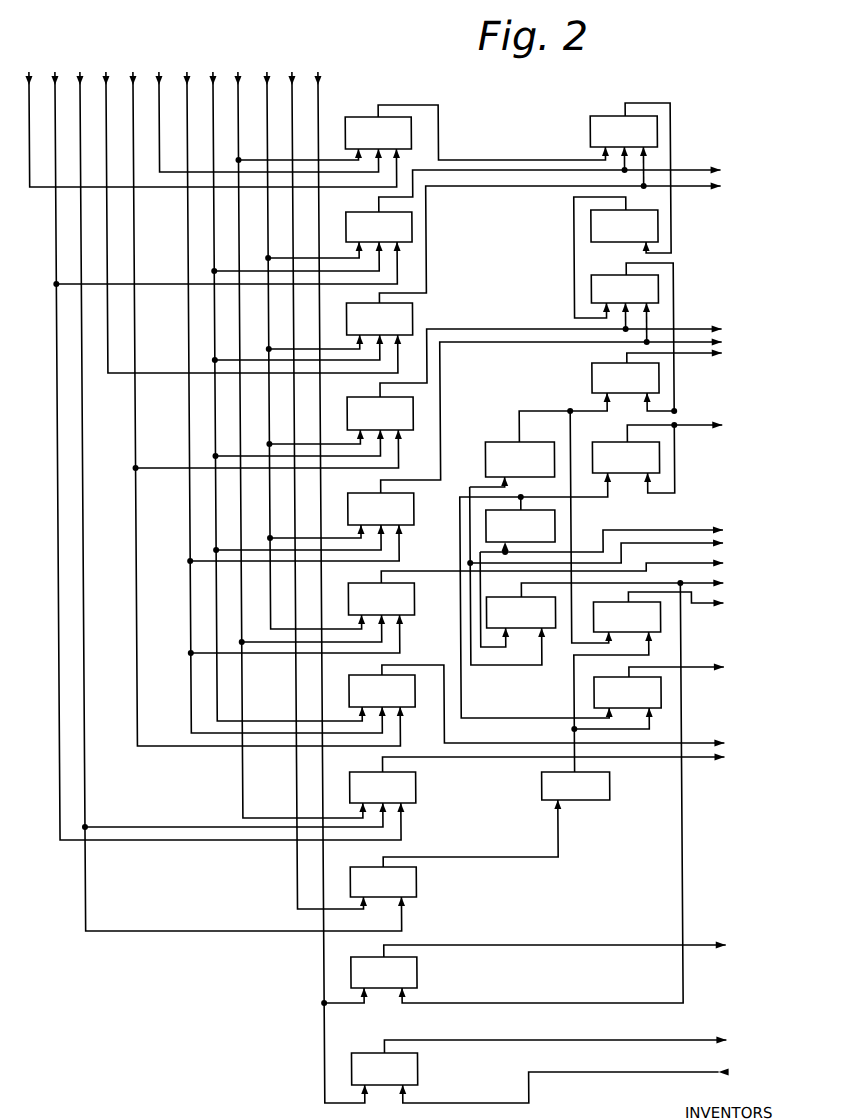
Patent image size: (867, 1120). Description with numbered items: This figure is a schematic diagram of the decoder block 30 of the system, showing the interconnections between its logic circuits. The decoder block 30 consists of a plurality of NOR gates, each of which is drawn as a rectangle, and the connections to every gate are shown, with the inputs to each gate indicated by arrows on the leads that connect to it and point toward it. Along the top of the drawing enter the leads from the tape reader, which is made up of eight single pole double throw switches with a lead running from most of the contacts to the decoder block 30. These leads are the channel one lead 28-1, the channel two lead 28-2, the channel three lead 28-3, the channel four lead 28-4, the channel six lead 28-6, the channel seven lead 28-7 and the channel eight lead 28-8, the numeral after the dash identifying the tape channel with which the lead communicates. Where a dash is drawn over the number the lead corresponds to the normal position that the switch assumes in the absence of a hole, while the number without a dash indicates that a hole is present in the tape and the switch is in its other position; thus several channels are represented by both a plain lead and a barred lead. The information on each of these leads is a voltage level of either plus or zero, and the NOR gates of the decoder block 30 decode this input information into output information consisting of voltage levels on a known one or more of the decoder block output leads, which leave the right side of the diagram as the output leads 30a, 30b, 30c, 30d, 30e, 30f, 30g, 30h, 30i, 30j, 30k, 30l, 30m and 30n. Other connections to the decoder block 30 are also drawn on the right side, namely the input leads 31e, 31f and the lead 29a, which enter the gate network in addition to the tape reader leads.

The lead from channel one of tape reader 28-1 is at (205, 437).
The lead from channel two of tape reader 28-2 is at (230, 482).
The lead from channel three of tape reader 28-3 is at (256, 390).
The lead from channel four of tape reader 28-4 is at (269, 383).
The lead from channel six of tape reader 28-6 is at (288, 426).
The lead from channel seven of tape reader 28-7 is at (305, 471).
The lead from channel eight of tape reader 28-8 is at (331, 568).
The decoder block 30 is at (706, 87).
The decoder block output lead 30a is at (573, 185).
The decoder block output lead 30b is at (574, 238).
The decoder block output lead 30c is at (574, 353).
The decoder block output lead 30d is at (576, 410).
The decoder block output lead 30e is at (698, 360).
The decoder block output lead 30f is at (697, 427).
The decoder block output lead 30g is at (645, 585).
The decoder block output lead 30h is at (575, 569).
The decoder block output lead 30i is at (695, 606).
The decoder block output lead 30j is at (696, 669).
The decoder block output lead 30k is at (576, 707).
The decoder block output lead 30l is at (573, 759).
The decoder block output lead 30m is at (582, 945).
The decoder block output lead 30n is at (579, 1040).
The input lead 31e is at (625, 535).
The input lead 31f is at (619, 548).
The lead 29a is at (588, 1082).